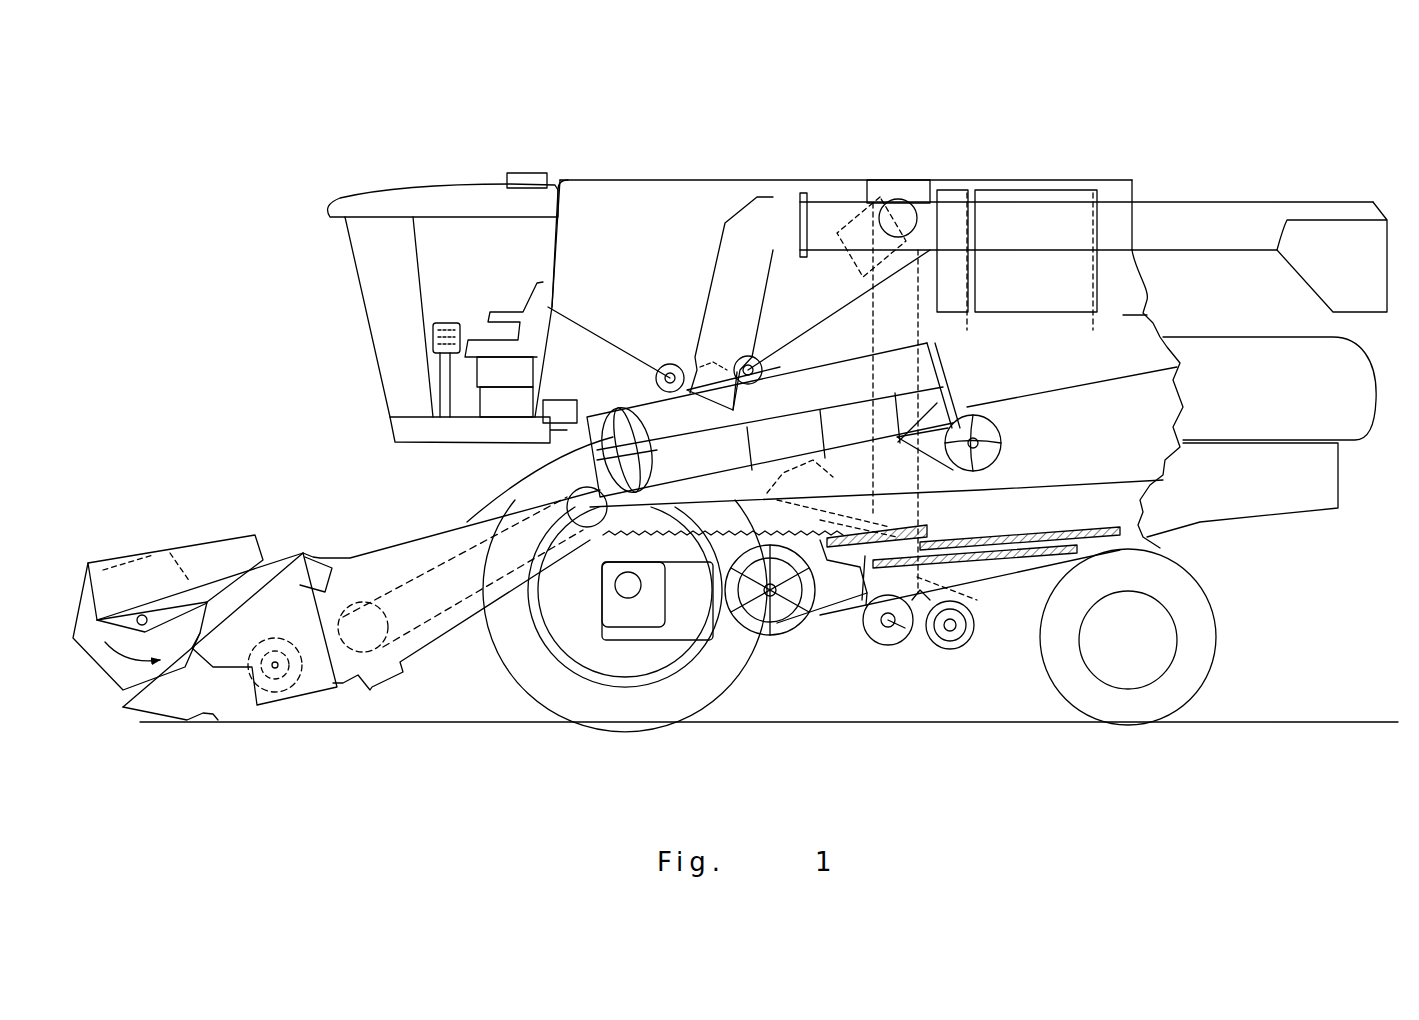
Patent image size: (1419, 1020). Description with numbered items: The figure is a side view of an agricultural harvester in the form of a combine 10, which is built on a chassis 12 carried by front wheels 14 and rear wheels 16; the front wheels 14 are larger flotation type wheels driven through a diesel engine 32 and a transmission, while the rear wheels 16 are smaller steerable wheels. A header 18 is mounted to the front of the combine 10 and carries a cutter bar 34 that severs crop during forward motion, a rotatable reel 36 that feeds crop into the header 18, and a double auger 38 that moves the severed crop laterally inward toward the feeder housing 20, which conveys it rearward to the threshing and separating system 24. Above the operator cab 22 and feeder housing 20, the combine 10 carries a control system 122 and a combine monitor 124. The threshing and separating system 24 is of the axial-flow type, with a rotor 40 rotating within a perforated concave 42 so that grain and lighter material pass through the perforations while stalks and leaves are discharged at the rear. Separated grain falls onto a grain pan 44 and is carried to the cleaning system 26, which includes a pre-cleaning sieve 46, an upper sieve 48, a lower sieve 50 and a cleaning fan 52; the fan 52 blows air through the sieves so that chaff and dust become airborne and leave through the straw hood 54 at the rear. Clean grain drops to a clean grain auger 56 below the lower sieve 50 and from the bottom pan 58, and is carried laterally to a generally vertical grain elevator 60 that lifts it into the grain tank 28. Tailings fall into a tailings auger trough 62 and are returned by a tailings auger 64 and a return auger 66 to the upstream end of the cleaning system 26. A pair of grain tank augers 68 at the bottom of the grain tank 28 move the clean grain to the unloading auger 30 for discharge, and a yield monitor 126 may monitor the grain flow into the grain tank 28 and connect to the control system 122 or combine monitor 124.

The combine 10 is at (432, 165).
The chassis 12 is at (1153, 548).
The front wheels 14 is at (520, 680).
The rear wheels 16 is at (1210, 660).
The header 18 is at (178, 532).
The feeder housing 20 is at (410, 530).
The operator cab 22 is at (368, 292).
The threshing and separating system 24 is at (527, 467).
The cleaning system 26 is at (850, 640).
The grain tank 28 is at (622, 185).
The unloading auger 30 is at (1228, 202).
The diesel engine 32 is at (1020, 190).
The cutter bar 34 is at (205, 712).
The reel 36 is at (88, 612).
The double auger 38 is at (275, 690).
The rotor 40 is at (607, 415).
The perforated concave 42 is at (815, 400).
The grain pan 44 is at (590, 565).
The pre-cleaning sieve 46 is at (927, 532).
The upper sieve 48 is at (1040, 542).
The lower sieve 50 is at (1002, 560).
The cleaning fan 52 is at (775, 640).
The straw hood 54 is at (1350, 380).
The clean grain auger 56 is at (890, 646).
The bottom pan 58 is at (1040, 565).
The grain elevator 60 is at (927, 323).
The tailings auger trough 62 is at (1040, 580).
The tailings auger 64 is at (948, 650).
The return auger 66 is at (884, 507).
The grain tank augers 68 is at (668, 365).
The control system 122 is at (533, 423).
The combine monitor 124 is at (448, 323).
The yield monitor 126 is at (880, 185).